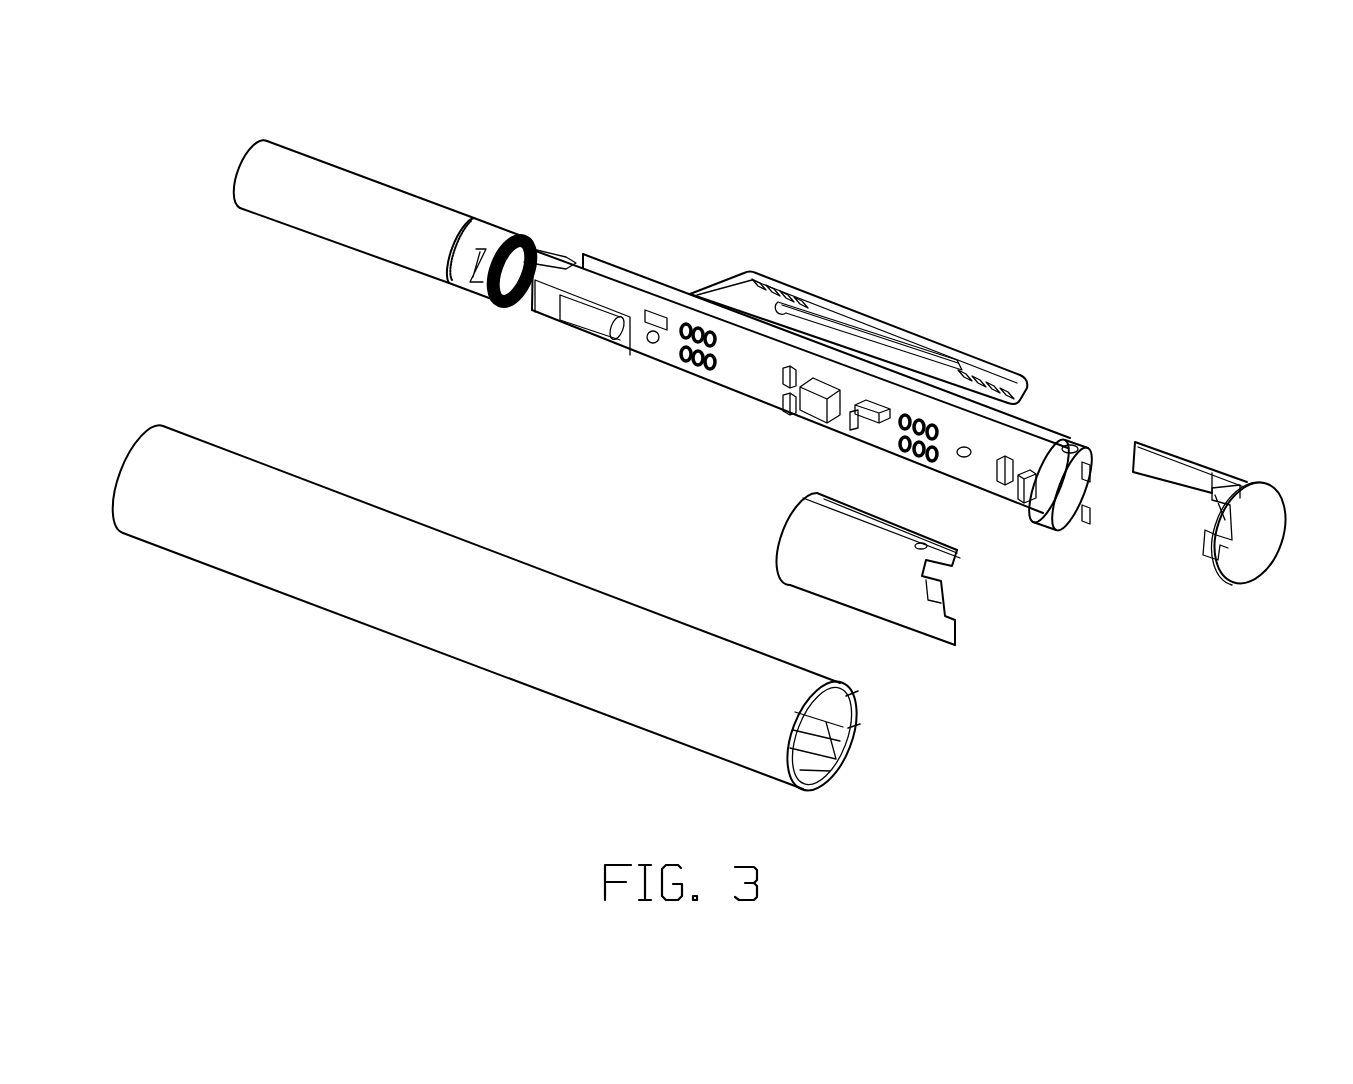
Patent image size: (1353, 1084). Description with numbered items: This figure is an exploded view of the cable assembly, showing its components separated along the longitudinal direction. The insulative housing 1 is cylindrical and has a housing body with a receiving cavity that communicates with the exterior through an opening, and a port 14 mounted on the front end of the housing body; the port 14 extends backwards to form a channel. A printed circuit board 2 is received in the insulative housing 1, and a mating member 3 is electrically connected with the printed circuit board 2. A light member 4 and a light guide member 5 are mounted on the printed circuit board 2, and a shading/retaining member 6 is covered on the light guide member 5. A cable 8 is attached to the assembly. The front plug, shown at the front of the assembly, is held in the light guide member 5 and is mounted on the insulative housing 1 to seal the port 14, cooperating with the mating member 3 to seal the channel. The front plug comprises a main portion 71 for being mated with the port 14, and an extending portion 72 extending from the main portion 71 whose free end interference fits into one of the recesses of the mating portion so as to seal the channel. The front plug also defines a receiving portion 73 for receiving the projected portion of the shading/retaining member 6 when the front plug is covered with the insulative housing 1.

The insulative housing 1 is at (555, 613).
The port 14 is at (825, 707).
The printed circuit board 2 is at (742, 373).
The mating member 3 is at (853, 325).
The light member 4 is at (1025, 488).
The light guide member 5 is at (1078, 503).
The shading/retaining member 6 is at (800, 543).
The cable 8 is at (370, 215).
The main portion 71 is at (1255, 553).
The extending portion 72 is at (1163, 473).
The receiving portion 73 is at (1203, 535).